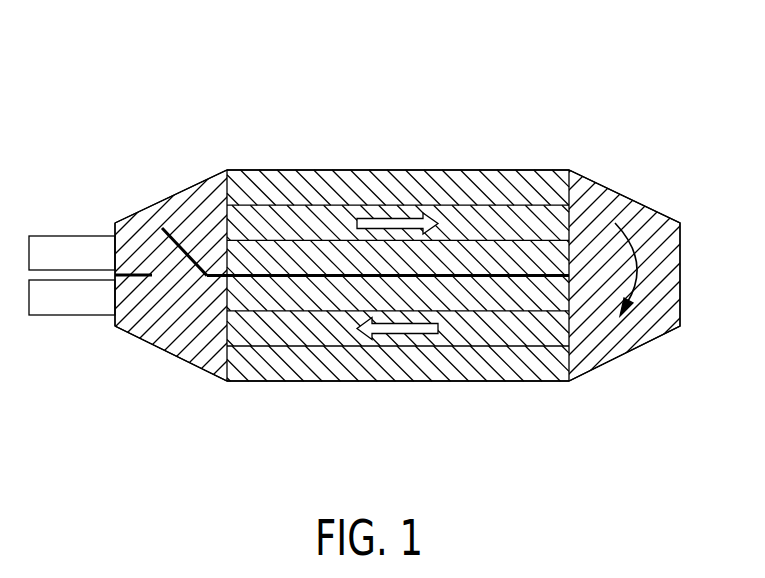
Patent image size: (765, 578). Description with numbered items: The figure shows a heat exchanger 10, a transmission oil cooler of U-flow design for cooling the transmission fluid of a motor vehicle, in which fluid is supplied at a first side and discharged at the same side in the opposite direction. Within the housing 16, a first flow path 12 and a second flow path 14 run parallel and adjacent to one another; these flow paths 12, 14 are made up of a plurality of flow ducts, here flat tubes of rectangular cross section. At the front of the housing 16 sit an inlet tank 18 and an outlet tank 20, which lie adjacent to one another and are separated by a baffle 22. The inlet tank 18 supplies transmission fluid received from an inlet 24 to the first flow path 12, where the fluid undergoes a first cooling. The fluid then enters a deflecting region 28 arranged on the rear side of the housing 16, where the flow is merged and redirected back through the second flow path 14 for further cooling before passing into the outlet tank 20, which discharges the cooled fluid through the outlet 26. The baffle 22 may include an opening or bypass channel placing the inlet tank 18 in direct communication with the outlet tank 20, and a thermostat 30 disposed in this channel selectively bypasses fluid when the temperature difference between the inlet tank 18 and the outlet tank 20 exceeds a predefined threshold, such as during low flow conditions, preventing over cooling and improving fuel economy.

The heat exchanger 10 is at (660, 97).
The first flow path 12 is at (383, 180).
The second flow path 14 is at (408, 370).
The housing 16 is at (263, 170).
The inlet tank 18 is at (163, 218).
The outlet tank 20 is at (203, 352).
The baffle 22 is at (132, 272).
The inlet 24 is at (43, 236).
The outlet 26 is at (33, 317).
The deflecting region 28 is at (672, 273).
The thermostat 30 is at (177, 230).